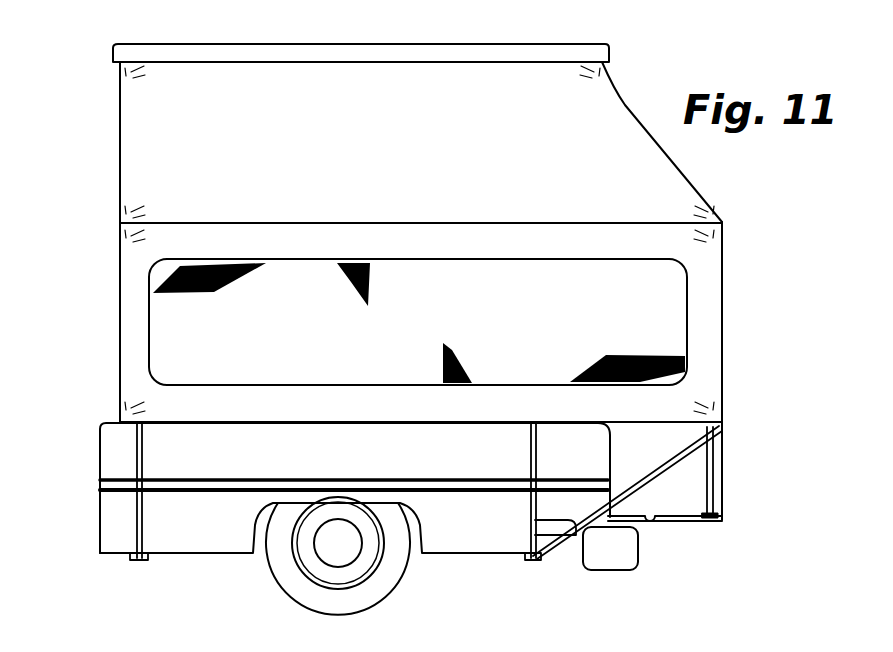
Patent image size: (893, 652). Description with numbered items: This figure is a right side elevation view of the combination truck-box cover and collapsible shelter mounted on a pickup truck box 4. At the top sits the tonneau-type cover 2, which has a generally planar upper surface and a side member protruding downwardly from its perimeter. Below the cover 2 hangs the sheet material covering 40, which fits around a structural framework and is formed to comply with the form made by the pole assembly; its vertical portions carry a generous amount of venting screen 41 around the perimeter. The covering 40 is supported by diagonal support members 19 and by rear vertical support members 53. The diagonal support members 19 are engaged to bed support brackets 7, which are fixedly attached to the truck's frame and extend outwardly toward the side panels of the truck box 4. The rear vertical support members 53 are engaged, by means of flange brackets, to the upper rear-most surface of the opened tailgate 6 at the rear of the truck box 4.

The tonneau-type cover 2 is at (152, 50).
The sheet material covering 40 is at (157, 163).
The venting screen 41 is at (485, 283).
The pickup truck box 4 is at (84, 442).
The diagonal support members 19 is at (143, 467).
The bed support brackets 7 is at (148, 560).
The rear vertical support members 53 is at (713, 475).
The tailgate 6 is at (690, 521).